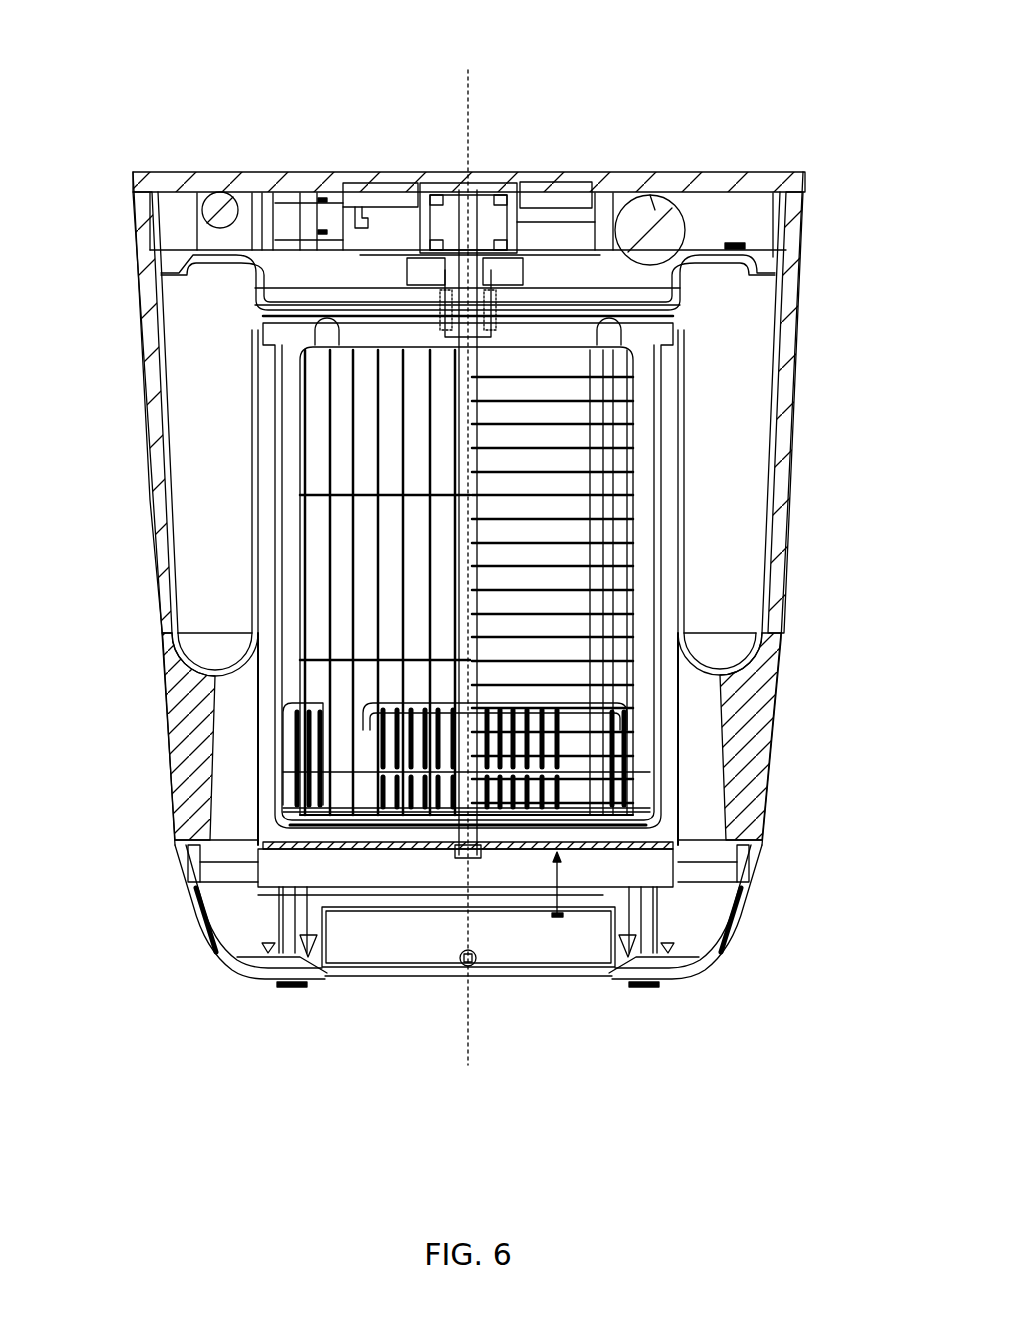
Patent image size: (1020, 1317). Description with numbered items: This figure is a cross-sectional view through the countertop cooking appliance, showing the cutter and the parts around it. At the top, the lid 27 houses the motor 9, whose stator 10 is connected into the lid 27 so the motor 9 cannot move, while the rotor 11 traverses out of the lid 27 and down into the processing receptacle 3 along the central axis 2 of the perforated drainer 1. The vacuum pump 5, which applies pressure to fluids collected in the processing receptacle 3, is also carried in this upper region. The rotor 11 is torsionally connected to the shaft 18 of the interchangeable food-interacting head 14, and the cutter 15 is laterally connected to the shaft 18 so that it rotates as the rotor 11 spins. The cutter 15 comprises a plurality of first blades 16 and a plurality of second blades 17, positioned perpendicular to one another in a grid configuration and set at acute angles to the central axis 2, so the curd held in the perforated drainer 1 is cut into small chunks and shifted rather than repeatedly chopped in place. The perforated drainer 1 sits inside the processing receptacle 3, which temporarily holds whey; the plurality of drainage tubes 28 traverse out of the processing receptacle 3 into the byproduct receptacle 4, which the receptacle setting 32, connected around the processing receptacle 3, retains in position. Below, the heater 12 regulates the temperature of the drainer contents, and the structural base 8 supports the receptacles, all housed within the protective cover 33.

The perforated drainer 1 is at (648, 735).
The central axis 2 is at (470, 1063).
The processing receptacle 3 is at (645, 387).
The byproduct receptacle 4 is at (716, 614).
The vacuum pump 5 is at (652, 205).
The structural base 8 is at (197, 905).
The motor 9 is at (534, 214).
The stator 10 is at (447, 170).
The rotor 11 is at (482, 170).
The heater 12 is at (388, 952).
The interchangeable food-interacting head 14 is at (510, 856).
The cutter 15 is at (400, 333).
The plurality of first blades 16 is at (632, 520).
The plurality of second blades 17 is at (345, 830).
The shaft 18 is at (478, 342).
The lid 27 is at (433, 422).
The plurality of drainage tubes 28 is at (270, 330).
The receptacle setting 32 is at (193, 683).
The cover 33 is at (158, 458).